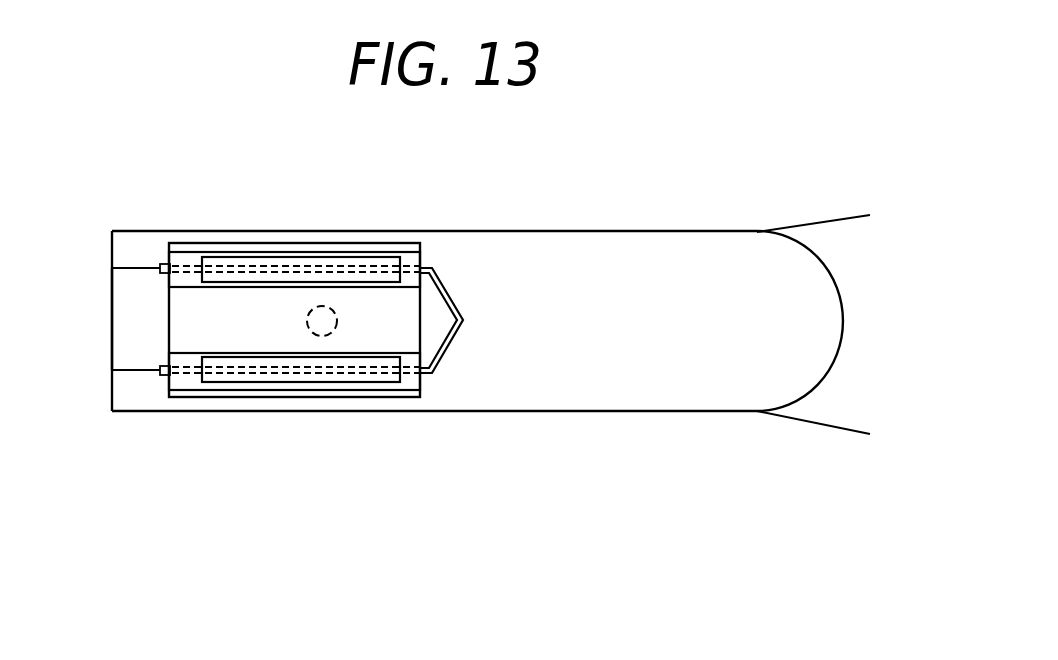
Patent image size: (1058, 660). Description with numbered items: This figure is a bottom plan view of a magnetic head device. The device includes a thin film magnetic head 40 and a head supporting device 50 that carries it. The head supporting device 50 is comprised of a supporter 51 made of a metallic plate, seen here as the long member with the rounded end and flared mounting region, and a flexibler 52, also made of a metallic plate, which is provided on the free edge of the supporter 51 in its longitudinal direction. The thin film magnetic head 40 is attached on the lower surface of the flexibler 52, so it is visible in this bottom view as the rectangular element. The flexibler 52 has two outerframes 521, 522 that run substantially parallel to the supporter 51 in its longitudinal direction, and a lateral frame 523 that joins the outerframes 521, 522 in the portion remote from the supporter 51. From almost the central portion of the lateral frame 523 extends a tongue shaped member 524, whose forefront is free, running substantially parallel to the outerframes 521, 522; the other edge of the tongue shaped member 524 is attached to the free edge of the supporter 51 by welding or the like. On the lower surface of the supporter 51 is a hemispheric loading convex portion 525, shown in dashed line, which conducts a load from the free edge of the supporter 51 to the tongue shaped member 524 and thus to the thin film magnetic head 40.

The thin film magnetic head 40 is at (253, 456).
The head supporting device 50 is at (650, 426).
The supporter 51 is at (826, 243).
The flexibler 52 is at (112, 396).
The outerframe 521 is at (150, 242).
The outerframe 522 is at (320, 405).
The lateral frame 523 is at (133, 340).
The tongue shaped member 524 is at (427, 340).
The hemispheric loading convex portion 525 is at (322, 308).